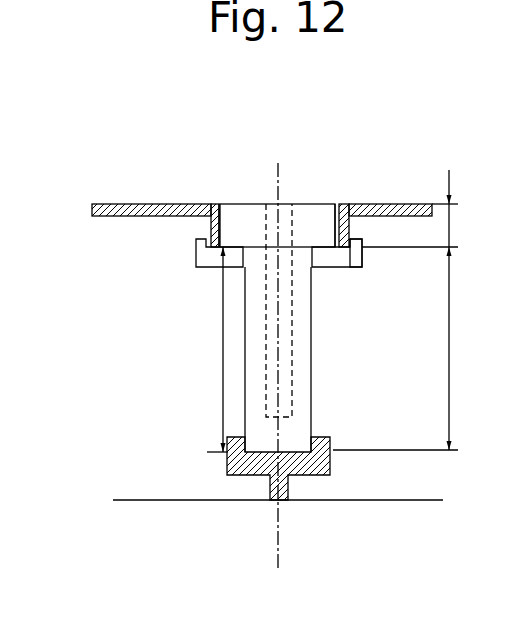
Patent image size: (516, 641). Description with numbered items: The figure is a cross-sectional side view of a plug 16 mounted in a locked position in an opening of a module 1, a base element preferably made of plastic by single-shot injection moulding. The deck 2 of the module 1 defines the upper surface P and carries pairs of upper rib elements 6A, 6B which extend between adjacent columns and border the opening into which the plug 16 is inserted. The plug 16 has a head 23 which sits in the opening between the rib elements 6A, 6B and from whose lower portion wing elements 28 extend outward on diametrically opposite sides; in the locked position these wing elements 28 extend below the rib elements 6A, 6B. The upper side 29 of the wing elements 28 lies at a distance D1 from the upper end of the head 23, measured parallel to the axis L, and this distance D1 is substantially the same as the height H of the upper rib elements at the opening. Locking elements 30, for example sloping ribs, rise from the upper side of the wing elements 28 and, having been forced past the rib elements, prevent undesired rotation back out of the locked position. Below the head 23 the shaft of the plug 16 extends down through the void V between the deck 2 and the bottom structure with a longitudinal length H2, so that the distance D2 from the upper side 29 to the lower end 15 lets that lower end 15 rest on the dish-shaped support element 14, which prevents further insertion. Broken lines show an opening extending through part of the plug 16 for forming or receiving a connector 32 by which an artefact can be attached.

The module 1 is at (146, 540).
The deck 2 is at (110, 204).
The first upper rib element 6A is at (350, 222).
The second upper rib element 6B is at (207, 223).
The support element 14 is at (263, 470).
The lower end of plug 15 is at (312, 422).
The plug 16 is at (210, 398).
The head 23 is at (318, 220).
The wing element 28 is at (213, 257).
The upper side of wing element 29 is at (212, 206).
The locking element 30 is at (358, 258).
The connector 32 is at (284, 390).
The upper surface P is at (148, 196).
The distance between upper end of head and upper side of wing elements D1 is at (248, 196).
The axis L is at (280, 184).
The void V is at (130, 364).
The distance between upper side of wing elements and lower end of shaft D2 is at (194, 351).
The height of upper rib elements H is at (418, 213).
The longitudinal length of shaft H2 is at (410, 348).